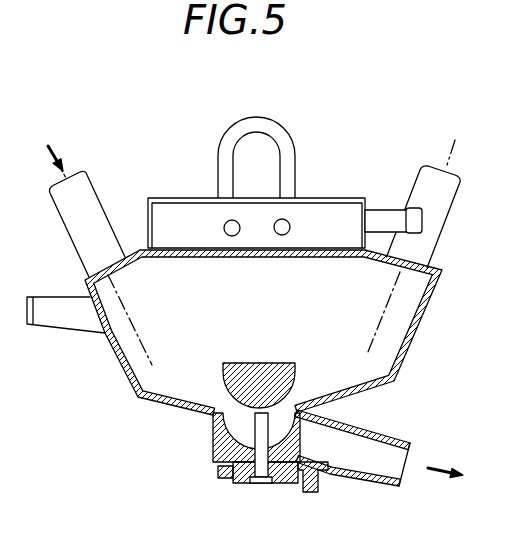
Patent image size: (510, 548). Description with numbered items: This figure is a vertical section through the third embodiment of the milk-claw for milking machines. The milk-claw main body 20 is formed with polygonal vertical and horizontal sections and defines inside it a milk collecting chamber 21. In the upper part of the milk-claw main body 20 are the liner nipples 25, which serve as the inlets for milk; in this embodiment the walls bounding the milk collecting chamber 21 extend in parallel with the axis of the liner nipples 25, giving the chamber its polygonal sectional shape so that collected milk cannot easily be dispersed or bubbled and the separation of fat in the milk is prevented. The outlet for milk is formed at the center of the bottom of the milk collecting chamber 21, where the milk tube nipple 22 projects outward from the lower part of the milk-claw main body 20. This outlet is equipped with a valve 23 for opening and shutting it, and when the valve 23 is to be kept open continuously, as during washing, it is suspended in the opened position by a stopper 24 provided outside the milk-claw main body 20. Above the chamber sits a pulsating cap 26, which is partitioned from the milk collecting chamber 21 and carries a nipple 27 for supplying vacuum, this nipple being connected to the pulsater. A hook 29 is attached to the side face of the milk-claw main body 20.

The milk-claw main body 20 is at (411, 344).
The milk collecting chamber 21 is at (258, 327).
The milk tube nipple 22 is at (386, 434).
The valve 23 is at (279, 363).
The stopper 24 is at (281, 485).
The liner nipples 25 is at (96, 194).
The pulsating cap 26 is at (334, 199).
The nipple for supplying vacuum 27 is at (389, 210).
The hook 29 is at (50, 327).